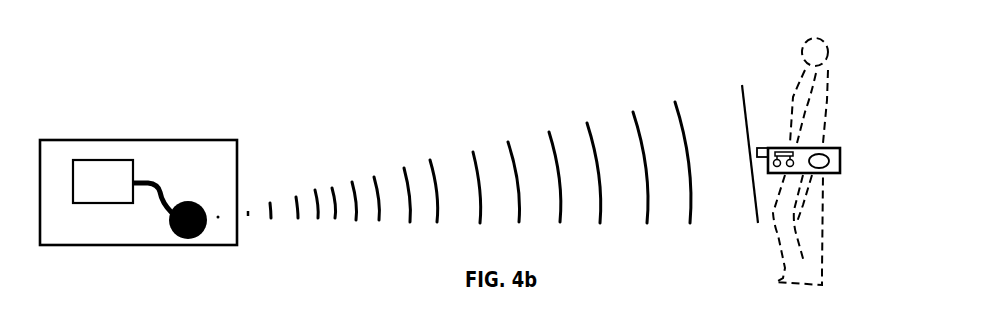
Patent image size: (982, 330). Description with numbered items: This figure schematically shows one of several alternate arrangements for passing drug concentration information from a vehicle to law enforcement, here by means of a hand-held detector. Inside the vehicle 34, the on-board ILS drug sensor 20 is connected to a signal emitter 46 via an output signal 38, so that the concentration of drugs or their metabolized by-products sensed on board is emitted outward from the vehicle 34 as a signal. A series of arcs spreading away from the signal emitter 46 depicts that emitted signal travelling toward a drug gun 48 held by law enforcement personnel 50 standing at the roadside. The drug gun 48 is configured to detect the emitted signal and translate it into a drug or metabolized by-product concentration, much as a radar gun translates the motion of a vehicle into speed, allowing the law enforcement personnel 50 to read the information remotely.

The vehicle 34 is at (141, 110).
The on-board ILS drug sensor 20 is at (110, 204).
The output signal 38 is at (165, 193).
The signal emitter 46 is at (190, 238).
The drug gun 48 is at (842, 152).
The law enforcement personnel 50 is at (793, 95).